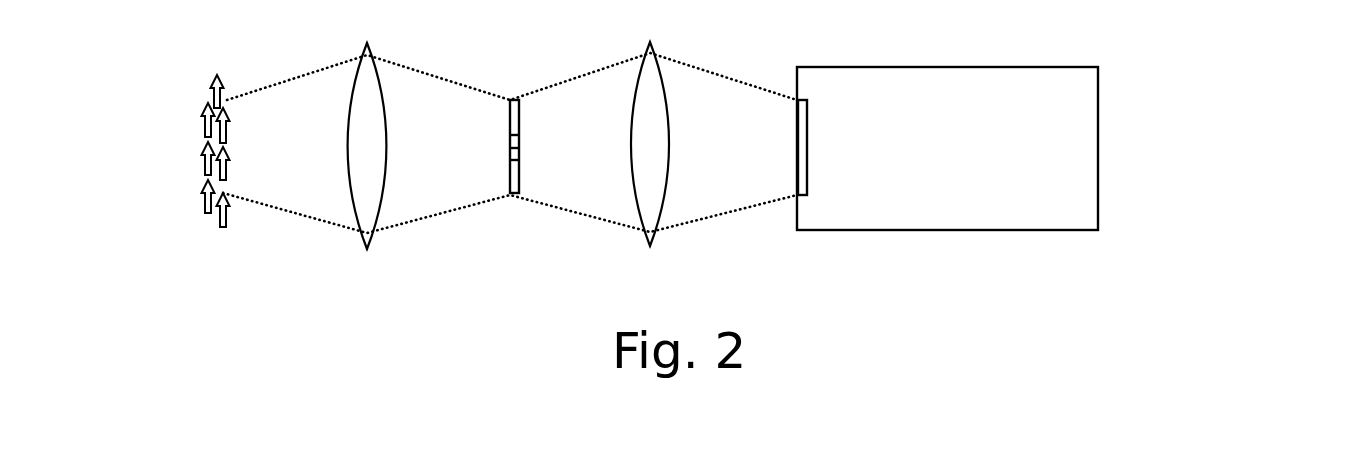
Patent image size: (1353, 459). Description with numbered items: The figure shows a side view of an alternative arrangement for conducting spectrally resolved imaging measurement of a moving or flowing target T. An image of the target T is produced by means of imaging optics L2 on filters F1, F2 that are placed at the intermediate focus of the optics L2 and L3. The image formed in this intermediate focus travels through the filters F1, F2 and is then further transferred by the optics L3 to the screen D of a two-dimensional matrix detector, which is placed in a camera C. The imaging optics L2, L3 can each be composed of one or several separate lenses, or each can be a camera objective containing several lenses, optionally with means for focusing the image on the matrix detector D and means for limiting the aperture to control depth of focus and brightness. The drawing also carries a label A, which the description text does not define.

The target T is at (190, 140).
The imaging optics L2 is at (340, 203).
The filter F1 is at (457, 195).
The filter F2 is at (500, 170).
The imaging optics L3 is at (622, 198).
The camera C is at (947, 148).
The screen of matrix detector D is at (810, 182).
The analyzer / processing unit A is at (1148, 145).